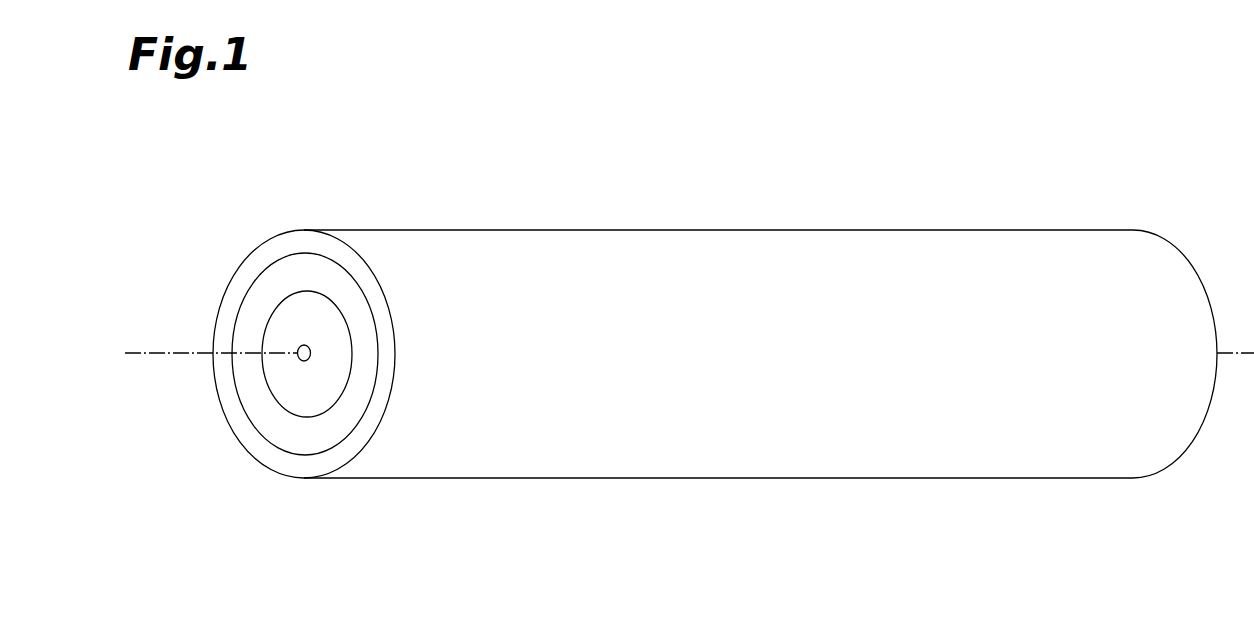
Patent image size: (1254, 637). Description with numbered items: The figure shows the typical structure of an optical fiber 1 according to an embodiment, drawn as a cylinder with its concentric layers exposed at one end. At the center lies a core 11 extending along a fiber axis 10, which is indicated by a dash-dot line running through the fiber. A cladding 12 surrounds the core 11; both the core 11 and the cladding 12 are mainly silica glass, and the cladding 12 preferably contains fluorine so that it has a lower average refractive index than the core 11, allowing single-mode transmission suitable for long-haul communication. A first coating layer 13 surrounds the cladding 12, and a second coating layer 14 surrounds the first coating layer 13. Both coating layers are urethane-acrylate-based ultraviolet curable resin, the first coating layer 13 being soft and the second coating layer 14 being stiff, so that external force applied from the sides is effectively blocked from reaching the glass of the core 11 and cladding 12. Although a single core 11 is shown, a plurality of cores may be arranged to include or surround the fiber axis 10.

The optical fiber 1 is at (692, 229).
The fiber axis 10 is at (168, 353).
The core 11 is at (298, 349).
The cladding 12 is at (285, 383).
The first coating layer 13 is at (290, 427).
The second coating layer 14 is at (296, 467).